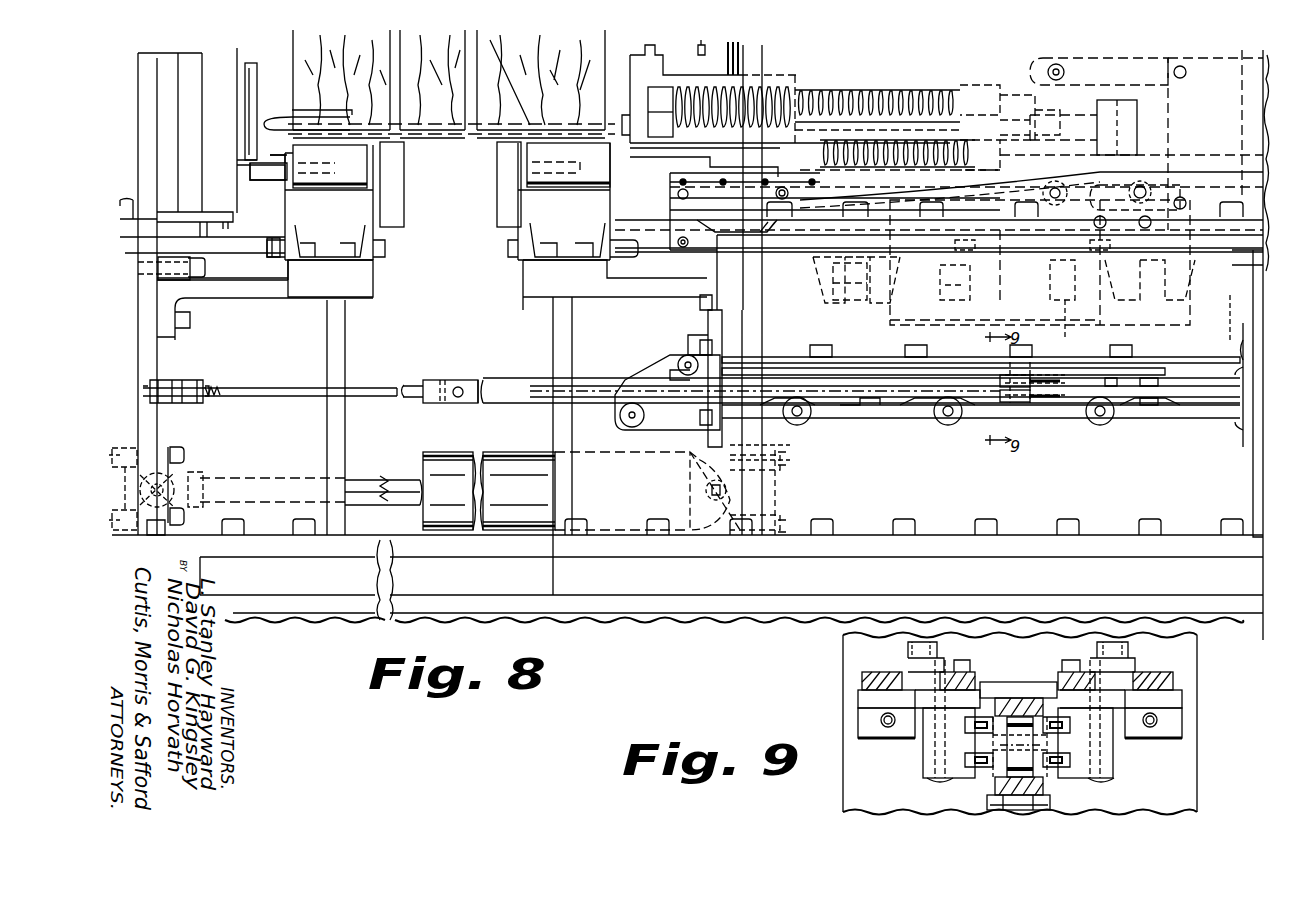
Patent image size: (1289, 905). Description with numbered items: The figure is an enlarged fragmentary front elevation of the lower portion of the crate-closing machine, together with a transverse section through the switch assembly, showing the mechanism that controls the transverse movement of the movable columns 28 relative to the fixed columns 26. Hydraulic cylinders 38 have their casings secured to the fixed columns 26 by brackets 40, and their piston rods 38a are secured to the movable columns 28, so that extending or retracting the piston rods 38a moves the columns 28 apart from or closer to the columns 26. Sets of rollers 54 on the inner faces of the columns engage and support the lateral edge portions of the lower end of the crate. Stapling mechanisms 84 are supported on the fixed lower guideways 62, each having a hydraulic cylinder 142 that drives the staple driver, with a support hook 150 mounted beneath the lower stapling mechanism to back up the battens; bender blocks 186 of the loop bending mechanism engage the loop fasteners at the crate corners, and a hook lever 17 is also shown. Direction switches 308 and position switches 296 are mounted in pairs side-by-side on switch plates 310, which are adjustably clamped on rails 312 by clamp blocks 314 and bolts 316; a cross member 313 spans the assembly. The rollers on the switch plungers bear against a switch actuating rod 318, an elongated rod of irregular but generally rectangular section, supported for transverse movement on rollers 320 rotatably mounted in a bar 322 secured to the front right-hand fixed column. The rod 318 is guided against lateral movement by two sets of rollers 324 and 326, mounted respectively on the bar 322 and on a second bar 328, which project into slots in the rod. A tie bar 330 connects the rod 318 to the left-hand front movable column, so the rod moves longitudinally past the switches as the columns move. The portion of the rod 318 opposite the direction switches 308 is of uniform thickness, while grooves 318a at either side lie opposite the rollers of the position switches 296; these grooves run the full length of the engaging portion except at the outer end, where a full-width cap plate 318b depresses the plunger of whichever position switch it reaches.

In FIG. 8, the hook lever 17 is at (276, 118).
In FIG. 8, the fixed columns 26 is at (1275, 285).
In FIG. 8, the movable columns 28 is at (361, 331).
In FIG. 8, the hydraulic cylinders 38 is at (438, 454).
In FIG. 8, the piston rods 38a is at (237, 486).
In FIG. 8, the brackets 40 is at (775, 490).
In FIG. 8, the rollers 54 is at (545, 187).
In FIG. 8, the guideways 62 is at (806, 288).
In FIG. 8, the stapling mechanisms 84 is at (814, 68).
In FIG. 8, the hydraulic cylinder 142 is at (1093, 103).
In FIG. 8, the support hook 150 is at (497, 193).
In FIG. 8, the bender blocks 186 is at (240, 72).
In FIG. 8, the position switches 296 is at (1066, 381).
In FIG. 9, the position switches 296 is at (1105, 733).
In FIG. 8, the direction switches 308 is at (1066, 396).
In FIG. 9, the direction switches 308 is at (1122, 778).
In FIG. 9, the switch plates 310 is at (1198, 688).
In FIG. 9, the rails 312 is at (1172, 660).
In FIG. 9, the cross member 313 is at (990, 665).
In FIG. 9, the clamp blocks 314 is at (1100, 635).
In FIG. 9, the bolts 316 is at (1136, 650).
In FIG. 8, the switch actuating rod 318 is at (584, 380).
In FIG. 9, the switch actuating rod 318 is at (1040, 768).
In FIG. 9, the grooves 318a is at (1047, 742).
In FIG. 8, the cap plate 318b is at (958, 403).
In FIG. 8, the rollers 320 is at (1093, 437).
In FIG. 9, the bar 322 is at (1045, 800).
In FIG. 8, the rollers 324 is at (1168, 400).
In FIG. 9, the rollers 324 is at (1000, 785).
In FIG. 8, the rollers 326 is at (1157, 427).
In FIG. 9, the rollers 326 is at (1030, 722).
In FIG. 8, the second bar 328 is at (1054, 365).
In FIG. 9, the second bar 328 is at (1000, 698).
In FIG. 8, the tie bar 330 is at (242, 397).